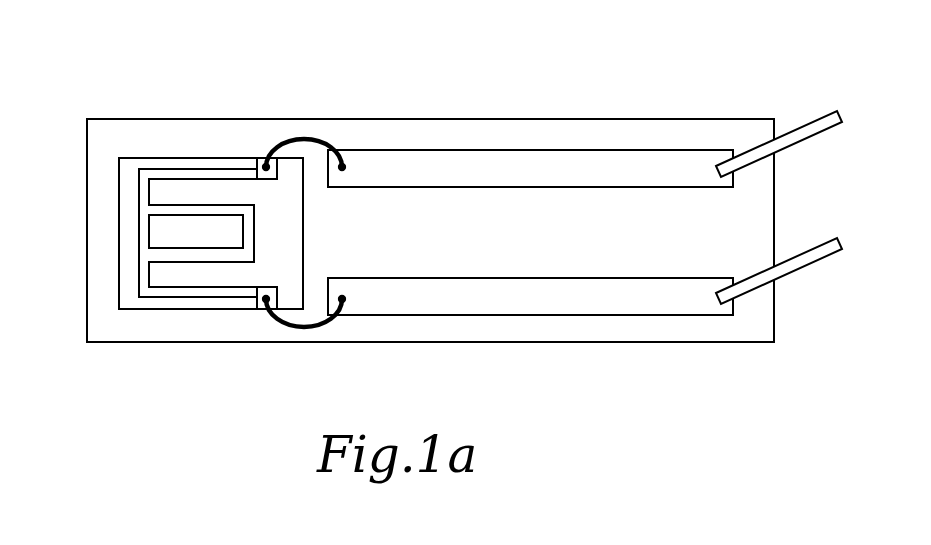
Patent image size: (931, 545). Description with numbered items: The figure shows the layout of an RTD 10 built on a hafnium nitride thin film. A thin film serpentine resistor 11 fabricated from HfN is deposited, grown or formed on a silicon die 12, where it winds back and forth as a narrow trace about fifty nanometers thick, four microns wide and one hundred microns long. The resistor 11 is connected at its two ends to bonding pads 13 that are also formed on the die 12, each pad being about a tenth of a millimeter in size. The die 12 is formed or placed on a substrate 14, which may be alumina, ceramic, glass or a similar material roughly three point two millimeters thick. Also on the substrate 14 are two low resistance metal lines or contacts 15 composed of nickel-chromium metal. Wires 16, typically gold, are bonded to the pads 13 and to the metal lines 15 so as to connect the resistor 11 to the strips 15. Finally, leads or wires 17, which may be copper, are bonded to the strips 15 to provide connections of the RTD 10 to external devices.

The RTD 10 is at (530, 56).
The thin film serpentine resistor 11 is at (220, 173).
The silicon die 12 is at (175, 157).
The bonding pads 13 is at (262, 165).
The substrate 14 is at (87, 230).
The metal lines or contacts 15 is at (497, 150).
The wires 16 is at (330, 142).
The leads or wires 17 is at (802, 122).